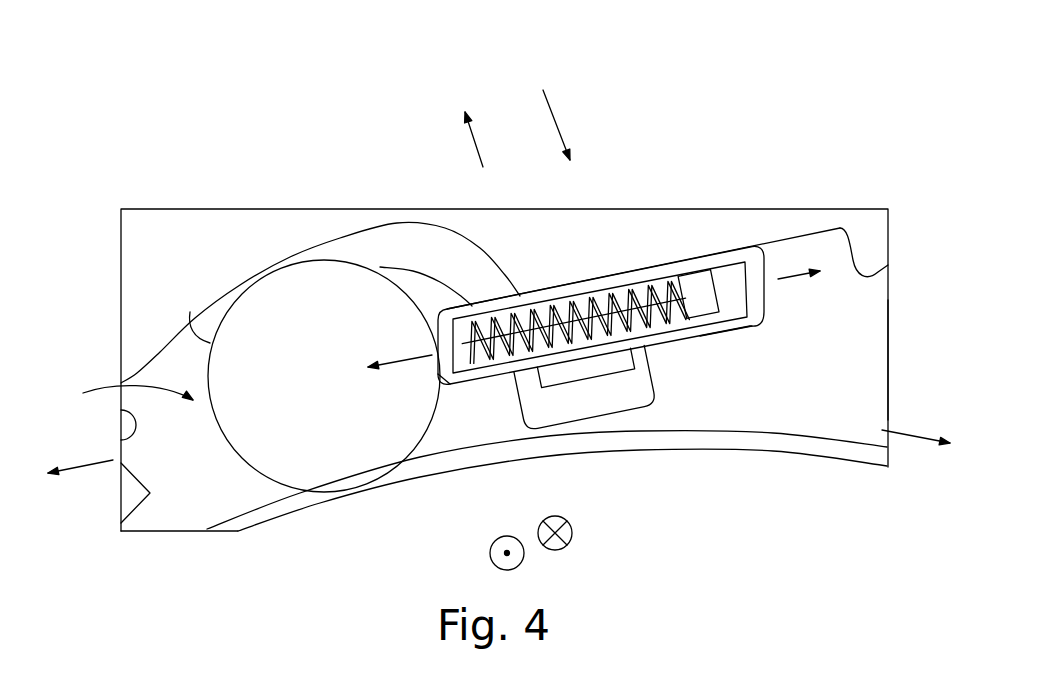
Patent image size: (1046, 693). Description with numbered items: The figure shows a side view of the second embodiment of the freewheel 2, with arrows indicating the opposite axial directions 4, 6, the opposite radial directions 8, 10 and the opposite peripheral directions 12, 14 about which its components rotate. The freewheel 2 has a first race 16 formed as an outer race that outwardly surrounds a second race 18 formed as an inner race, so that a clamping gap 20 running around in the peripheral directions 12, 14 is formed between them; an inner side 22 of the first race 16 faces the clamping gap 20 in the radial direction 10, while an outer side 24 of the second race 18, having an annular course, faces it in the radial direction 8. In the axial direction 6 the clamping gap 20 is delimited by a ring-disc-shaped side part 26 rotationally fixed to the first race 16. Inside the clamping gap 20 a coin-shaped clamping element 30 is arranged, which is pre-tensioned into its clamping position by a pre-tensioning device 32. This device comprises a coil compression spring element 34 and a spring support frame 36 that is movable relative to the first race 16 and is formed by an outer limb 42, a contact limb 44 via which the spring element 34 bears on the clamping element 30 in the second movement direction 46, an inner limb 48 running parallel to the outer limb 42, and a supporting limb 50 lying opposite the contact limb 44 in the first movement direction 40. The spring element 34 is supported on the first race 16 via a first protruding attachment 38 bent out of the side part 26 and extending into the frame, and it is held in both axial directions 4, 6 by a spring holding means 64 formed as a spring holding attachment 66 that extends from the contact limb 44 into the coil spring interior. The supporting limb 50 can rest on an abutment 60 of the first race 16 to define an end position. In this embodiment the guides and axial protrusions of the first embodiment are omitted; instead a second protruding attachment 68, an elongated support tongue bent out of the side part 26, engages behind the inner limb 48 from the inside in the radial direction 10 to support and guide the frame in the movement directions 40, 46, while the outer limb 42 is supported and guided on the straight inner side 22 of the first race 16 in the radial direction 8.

The freewheel 2 is at (787, 121).
The axial direction 4 is at (490, 552).
The axial direction 6 is at (570, 543).
The radial direction 8 is at (470, 118).
The radial direction 10 is at (548, 95).
The peripheral direction 12 is at (90, 470).
The peripheral direction 14 is at (898, 432).
The first race 16 is at (618, 272).
The second race 18 is at (754, 452).
The clamping gap 20 is at (120, 393).
The inner side 22 is at (352, 250).
The outer side 24 is at (597, 440).
The side part 26 is at (858, 333).
The clamping element 30 is at (288, 295).
The pre-tensioning device 32 is at (670, 352).
The spring element 34 is at (612, 275).
The spring support frame 36 is at (730, 337).
The first protruding attachment 38 is at (695, 277).
The first movement direction 40 is at (797, 268).
The outer limb 42 is at (530, 295).
The contact limb 44 is at (445, 315).
The second movement direction 46 is at (403, 363).
The inner limb 48 is at (667, 338).
The supporting limb 50 is at (750, 247).
The abutment 60 is at (867, 240).
The spring holding means 64 is at (452, 455).
The spring holding attachment 66 is at (502, 368).
The second protruding attachment 68 is at (602, 367).